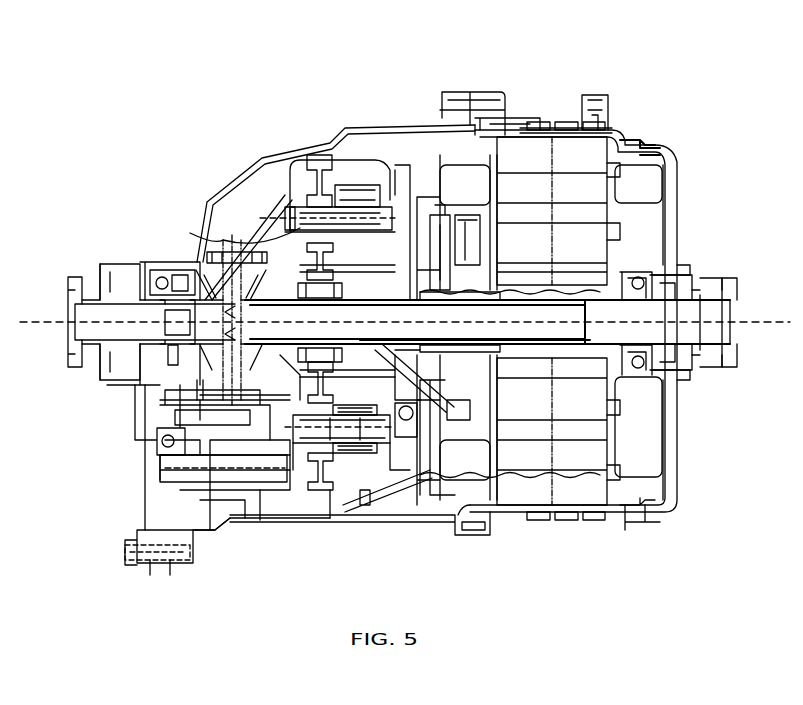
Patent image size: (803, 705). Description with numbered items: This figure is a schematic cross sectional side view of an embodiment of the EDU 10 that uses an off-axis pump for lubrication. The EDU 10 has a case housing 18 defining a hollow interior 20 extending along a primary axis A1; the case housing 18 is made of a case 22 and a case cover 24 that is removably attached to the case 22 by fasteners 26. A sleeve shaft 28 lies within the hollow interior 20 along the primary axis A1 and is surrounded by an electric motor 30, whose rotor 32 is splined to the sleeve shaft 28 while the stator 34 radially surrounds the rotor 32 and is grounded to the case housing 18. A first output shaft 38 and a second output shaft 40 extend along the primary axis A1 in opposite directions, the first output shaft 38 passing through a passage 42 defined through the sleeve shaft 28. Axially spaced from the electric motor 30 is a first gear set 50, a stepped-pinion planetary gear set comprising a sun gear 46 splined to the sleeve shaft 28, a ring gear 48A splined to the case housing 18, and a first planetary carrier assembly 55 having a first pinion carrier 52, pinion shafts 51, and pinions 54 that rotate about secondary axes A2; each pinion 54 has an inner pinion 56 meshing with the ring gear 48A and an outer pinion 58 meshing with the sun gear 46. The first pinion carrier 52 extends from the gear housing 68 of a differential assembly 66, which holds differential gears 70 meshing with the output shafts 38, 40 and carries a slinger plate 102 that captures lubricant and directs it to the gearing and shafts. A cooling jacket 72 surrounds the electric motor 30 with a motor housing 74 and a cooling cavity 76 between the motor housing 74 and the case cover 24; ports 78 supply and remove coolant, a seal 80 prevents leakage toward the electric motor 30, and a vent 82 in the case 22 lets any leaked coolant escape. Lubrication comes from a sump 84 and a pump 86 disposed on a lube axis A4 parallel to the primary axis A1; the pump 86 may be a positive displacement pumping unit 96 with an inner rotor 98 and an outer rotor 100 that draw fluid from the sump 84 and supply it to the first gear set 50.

The EDU 10 is at (190, 185).
The case housing 18 is at (388, 130).
The hollow interior 20 is at (248, 195).
The case 22 is at (285, 185).
The case cover 24 is at (630, 135).
The fasteners 26 is at (450, 95).
The sleeve shaft 28 is at (603, 350).
The electric motor 30 is at (533, 157).
The rotor 32 is at (567, 365).
The stator 34 is at (573, 453).
The first output shaft 38 is at (700, 330).
The second output shaft 40 is at (80, 330).
The passage 42 is at (635, 310).
The sun gear 46 is at (322, 490).
The ring gear 48A is at (355, 200).
The first gear set 50 is at (290, 190).
The pinion shafts 51 is at (260, 260).
The first pinion carrier 52 is at (235, 258).
The pinions 54 is at (392, 195).
The first planetary carrier assembly 55 is at (300, 215).
The inner pinion 56 is at (340, 210).
The outer pinion 58 is at (320, 200).
The differential assembly 66 is at (205, 270).
The gear housing 68 is at (187, 355).
The differential gears 70 is at (290, 455).
The cooling jacket 72 is at (520, 118).
The motor housing 74 is at (579, 130).
The cooling cavity 76 is at (571, 124).
The port 78 is at (596, 128).
The seal 80 is at (644, 142).
The vent 82 is at (640, 524).
The sump 84 is at (302, 472).
The pump 86 is at (225, 540).
The positive displacement pumping unit 96 is at (210, 535).
The inner rotor 98 is at (230, 475).
The outer rotor 100 is at (235, 495).
The slinger plate 102 is at (222, 535).
The primary axis A1 is at (75, 300).
The secondary axis A2 is at (240, 215).
The lube axis A4 is at (120, 470).